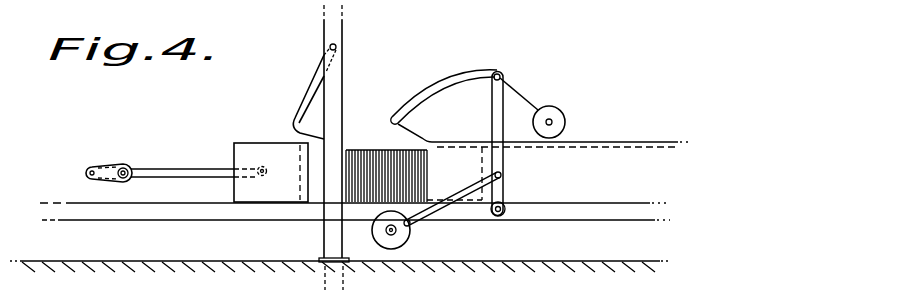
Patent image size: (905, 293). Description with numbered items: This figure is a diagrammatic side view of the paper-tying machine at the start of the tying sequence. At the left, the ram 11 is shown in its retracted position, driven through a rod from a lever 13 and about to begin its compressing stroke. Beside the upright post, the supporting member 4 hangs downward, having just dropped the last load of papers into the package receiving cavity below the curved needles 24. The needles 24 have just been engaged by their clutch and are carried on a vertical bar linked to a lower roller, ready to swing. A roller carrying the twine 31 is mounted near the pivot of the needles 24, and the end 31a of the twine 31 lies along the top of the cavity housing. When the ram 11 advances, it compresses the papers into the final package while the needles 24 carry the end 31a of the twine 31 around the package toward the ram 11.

The supporting member 4 is at (306, 87).
The ram 11 is at (247, 150).
The lever 13 is at (137, 147).
The needles 24 is at (467, 78).
The twine 31 is at (535, 102).
The end of the twine 31a is at (400, 123).